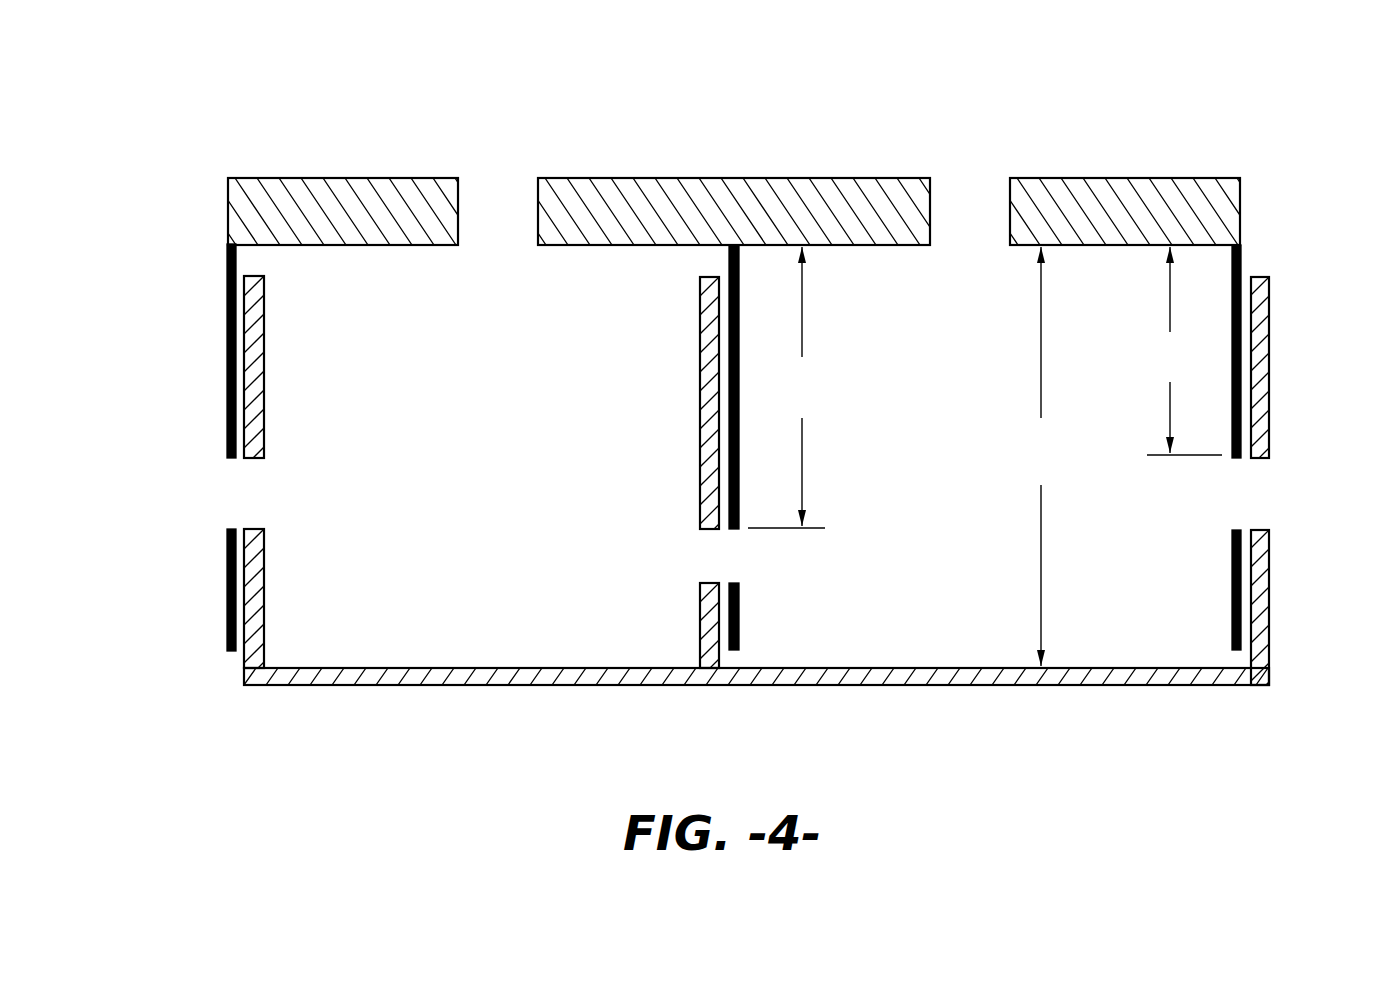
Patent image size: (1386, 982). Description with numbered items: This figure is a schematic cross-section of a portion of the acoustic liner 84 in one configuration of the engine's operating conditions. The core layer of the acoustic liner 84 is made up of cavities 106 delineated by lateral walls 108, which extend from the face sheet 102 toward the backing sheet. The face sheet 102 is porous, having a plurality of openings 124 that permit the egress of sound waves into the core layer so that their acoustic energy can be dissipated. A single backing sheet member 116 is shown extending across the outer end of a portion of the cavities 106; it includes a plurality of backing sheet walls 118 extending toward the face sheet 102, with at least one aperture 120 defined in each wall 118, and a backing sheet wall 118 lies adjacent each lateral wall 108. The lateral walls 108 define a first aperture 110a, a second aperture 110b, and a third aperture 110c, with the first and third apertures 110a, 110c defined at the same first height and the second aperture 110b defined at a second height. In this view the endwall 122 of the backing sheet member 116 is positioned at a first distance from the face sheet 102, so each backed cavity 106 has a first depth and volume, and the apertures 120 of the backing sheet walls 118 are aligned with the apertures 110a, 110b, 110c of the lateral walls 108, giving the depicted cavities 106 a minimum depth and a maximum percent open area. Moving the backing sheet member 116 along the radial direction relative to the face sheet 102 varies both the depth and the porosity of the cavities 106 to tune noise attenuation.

The acoustic liner 84 is at (755, 396).
The face sheet 102 is at (317, 190).
The cavities 106 is at (462, 624).
The lateral walls 108 is at (227, 338).
The first aperture 110a is at (212, 503).
The second aperture 110b is at (748, 558).
The third aperture 110c is at (1222, 499).
The backing sheet member 116 is at (1293, 603).
The backing sheet walls 118 is at (264, 357).
The aperture 120 is at (272, 501).
The endwall 122 is at (532, 676).
The openings 124 is at (496, 178).